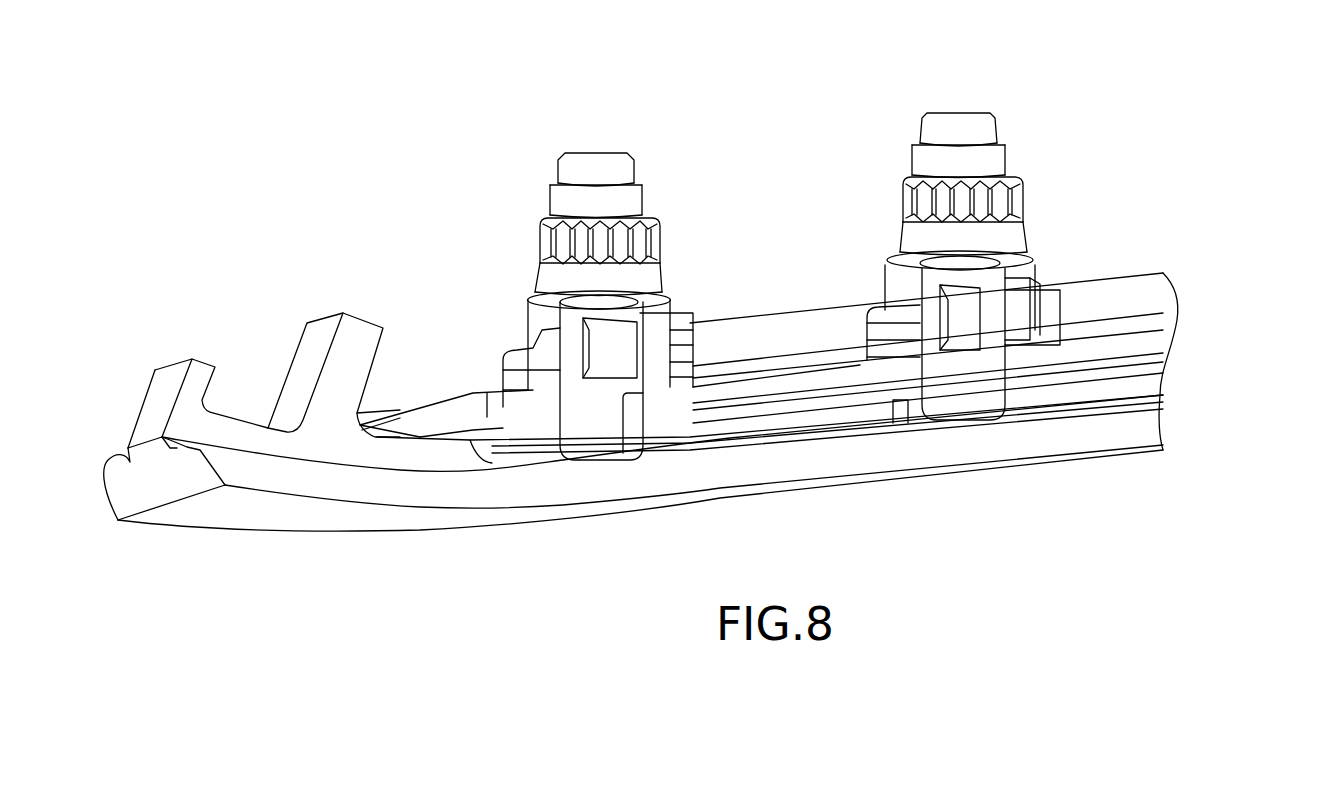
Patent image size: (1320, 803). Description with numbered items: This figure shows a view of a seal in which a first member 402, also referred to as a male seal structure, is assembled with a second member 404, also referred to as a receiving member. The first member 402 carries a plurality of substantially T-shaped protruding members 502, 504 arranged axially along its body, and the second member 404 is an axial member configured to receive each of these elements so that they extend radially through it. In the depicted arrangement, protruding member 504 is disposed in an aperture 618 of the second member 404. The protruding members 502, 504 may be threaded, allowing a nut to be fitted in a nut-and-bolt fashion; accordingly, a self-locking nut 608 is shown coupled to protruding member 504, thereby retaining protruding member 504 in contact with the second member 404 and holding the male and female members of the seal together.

The first member 402 is at (1198, 533).
The second member 404 is at (1143, 295).
The protruding member 502 is at (597, 152).
The protruding member 504 is at (977, 113).
The self-locking nut 608 is at (1025, 190).
The aperture 618 is at (1012, 298).